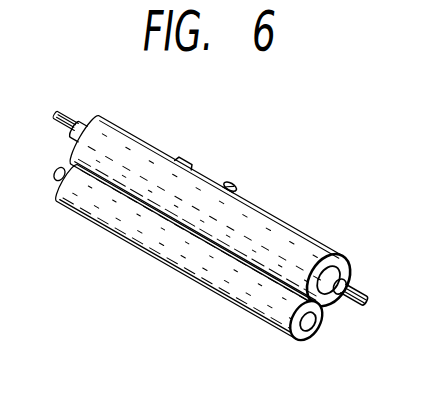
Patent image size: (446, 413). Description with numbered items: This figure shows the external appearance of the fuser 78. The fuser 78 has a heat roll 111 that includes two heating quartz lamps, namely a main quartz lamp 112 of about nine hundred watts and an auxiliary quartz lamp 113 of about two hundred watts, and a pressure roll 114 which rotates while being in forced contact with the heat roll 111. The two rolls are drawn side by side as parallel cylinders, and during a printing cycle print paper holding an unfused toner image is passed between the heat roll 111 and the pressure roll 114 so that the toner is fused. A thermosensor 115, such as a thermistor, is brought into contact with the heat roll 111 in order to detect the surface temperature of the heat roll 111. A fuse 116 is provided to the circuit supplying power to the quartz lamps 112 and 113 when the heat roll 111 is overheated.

The fuser 78 is at (216, 234).
The heat roll 111 is at (291, 224).
The main quartz lamp 112 is at (357, 290).
The auxiliary quartz lamp 113 is at (356, 306).
The pressure roll 114 is at (271, 326).
The thermosensor 115 is at (186, 157).
The fuse 116 is at (235, 185).